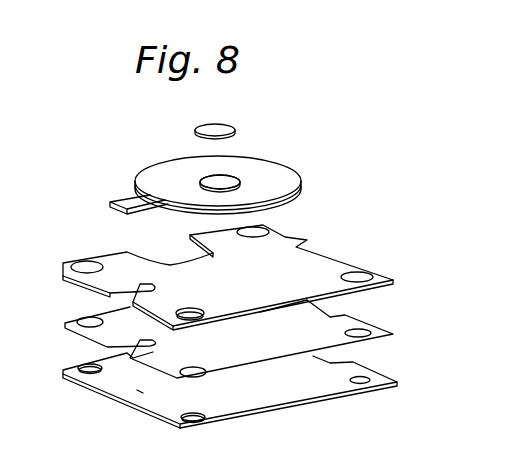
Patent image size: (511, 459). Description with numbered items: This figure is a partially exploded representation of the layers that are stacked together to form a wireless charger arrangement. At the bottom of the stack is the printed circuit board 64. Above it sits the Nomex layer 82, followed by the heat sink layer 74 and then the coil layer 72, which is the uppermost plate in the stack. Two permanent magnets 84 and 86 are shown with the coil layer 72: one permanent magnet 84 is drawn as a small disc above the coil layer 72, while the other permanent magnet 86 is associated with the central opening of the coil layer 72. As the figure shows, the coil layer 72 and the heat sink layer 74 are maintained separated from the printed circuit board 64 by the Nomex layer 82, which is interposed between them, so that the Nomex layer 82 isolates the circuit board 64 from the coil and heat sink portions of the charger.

The permanent magnet 84 is at (225, 123).
The coil layer 72 is at (278, 178).
The permanent magnet 86 is at (213, 180).
The heat sink layer 74 is at (330, 262).
The Nomex layer 82 is at (345, 315).
The printed circuit board 64 is at (350, 360).